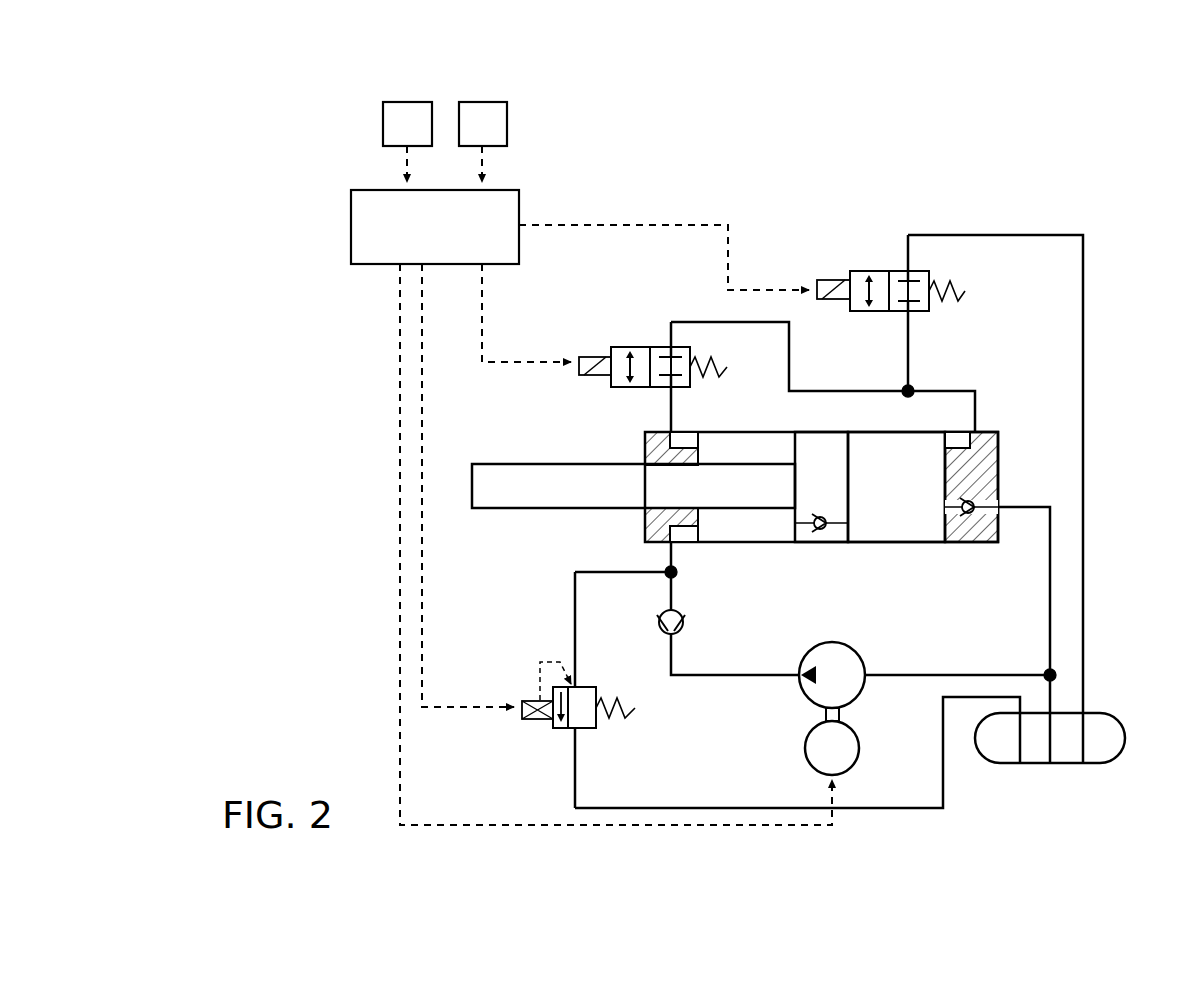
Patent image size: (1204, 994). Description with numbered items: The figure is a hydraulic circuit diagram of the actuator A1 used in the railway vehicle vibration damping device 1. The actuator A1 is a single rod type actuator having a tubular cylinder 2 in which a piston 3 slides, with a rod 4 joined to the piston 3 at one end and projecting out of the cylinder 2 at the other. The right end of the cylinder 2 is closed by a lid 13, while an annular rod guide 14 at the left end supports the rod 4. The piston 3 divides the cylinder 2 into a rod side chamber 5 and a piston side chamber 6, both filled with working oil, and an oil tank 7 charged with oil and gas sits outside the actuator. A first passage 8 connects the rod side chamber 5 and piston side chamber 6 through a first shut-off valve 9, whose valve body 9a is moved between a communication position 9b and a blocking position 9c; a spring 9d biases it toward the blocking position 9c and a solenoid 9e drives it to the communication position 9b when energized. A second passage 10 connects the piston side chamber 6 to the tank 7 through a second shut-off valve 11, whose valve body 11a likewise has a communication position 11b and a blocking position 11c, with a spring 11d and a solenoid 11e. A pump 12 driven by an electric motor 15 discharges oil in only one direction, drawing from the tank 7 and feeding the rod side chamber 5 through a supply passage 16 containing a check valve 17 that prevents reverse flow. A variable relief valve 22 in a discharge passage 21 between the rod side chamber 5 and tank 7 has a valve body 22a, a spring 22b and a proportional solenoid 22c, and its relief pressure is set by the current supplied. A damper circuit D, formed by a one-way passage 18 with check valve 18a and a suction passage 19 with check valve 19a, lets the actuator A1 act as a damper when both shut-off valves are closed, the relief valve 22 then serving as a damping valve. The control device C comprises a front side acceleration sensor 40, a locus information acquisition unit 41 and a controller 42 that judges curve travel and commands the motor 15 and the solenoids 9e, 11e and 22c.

The railway vehicle vibration damping device 1 is at (788, 108).
The cylinder 2 is at (886, 542).
The piston 3 is at (800, 544).
The rod 4 is at (509, 508).
The rod side chamber 5 is at (747, 463).
The piston side chamber 6 is at (898, 498).
The tank 7 is at (1100, 713).
The first passage 8 is at (717, 322).
The first shut-off valve 9 is at (601, 393).
The valve body 9a is at (605, 339).
The communication position 9b is at (630, 347).
The blocking position 9c is at (688, 388).
The spring 9d is at (727, 363).
The solenoid 9e is at (579, 368).
The second passage 10 is at (1083, 455).
The second shut-off valve 11 is at (846, 258).
The valve body 11a is at (850, 318).
The communication position 11b is at (883, 271).
The blocking position 11c is at (925, 312).
The spring 11d is at (965, 291).
The solenoid 11e is at (825, 280).
The pump 12 is at (850, 647).
The lid 13 is at (998, 448).
The rod guide 14 is at (645, 520).
The electric motor 15 is at (805, 748).
The supply passage 16 is at (671, 598).
The check valve 17 is at (685, 630).
The one-way passage 18 is at (838, 543).
The check valve 18a is at (825, 543).
The suction passage 19 is at (1050, 600).
The check valve 19a is at (968, 543).
The discharge passage 21 is at (655, 808).
The variable relief valve 22 is at (513, 698).
The valve body 22a is at (553, 730).
The spring 22b is at (635, 708).
The proportional solenoid 22c is at (522, 715).
The front side acceleration sensor 40 is at (383, 116).
The locus information acquisition unit 41 is at (507, 116).
The controller 42 is at (519, 207).
The control device C is at (582, 60).
The damper circuit D is at (1068, 524).
The actuator A1 is at (1092, 206).